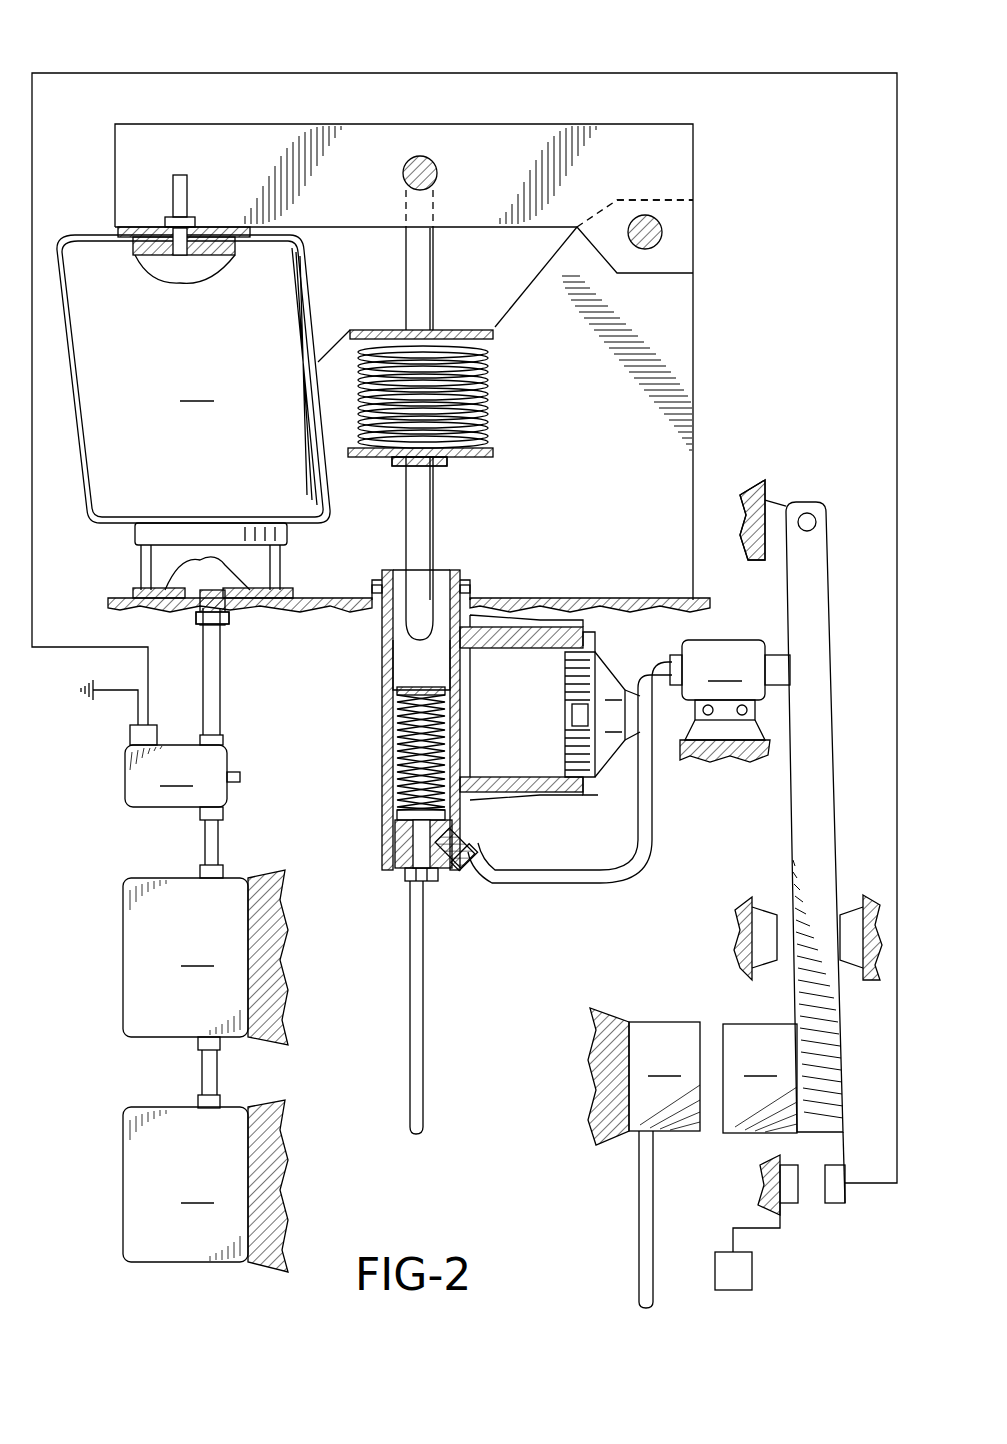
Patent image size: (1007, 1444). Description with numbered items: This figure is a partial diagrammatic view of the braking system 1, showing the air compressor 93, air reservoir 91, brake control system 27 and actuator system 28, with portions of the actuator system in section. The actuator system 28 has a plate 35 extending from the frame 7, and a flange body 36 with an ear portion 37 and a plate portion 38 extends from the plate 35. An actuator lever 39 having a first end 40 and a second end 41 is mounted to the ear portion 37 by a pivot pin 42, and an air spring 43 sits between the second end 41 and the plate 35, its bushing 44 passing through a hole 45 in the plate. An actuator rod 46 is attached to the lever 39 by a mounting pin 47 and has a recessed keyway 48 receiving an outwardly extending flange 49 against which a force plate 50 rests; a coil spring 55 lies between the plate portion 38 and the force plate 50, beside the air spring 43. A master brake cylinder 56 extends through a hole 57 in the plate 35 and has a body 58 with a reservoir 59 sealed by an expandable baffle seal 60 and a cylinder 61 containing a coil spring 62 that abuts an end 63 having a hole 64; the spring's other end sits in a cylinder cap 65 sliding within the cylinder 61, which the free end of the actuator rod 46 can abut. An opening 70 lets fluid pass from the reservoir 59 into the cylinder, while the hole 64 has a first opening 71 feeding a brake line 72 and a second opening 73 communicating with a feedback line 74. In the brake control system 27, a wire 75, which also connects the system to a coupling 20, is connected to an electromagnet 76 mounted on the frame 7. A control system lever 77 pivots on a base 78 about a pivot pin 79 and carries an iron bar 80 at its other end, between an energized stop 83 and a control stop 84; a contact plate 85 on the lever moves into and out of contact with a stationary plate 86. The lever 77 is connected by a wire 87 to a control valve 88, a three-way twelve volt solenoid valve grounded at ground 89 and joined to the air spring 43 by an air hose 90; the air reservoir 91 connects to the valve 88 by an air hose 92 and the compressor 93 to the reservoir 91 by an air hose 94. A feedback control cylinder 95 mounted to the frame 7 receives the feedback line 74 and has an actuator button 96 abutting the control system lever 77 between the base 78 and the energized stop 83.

The braking system 1 is at (618, 58).
The frame 7 is at (318, 608).
The coupling 20 is at (735, 1290).
The brake control system 27 is at (853, 1136).
The actuator system 28 is at (693, 372).
The plate 35 is at (592, 598).
The flange body 36 is at (675, 315).
The ear portion 37 is at (693, 200).
The plate portion 38 is at (494, 336).
The actuator lever 39 is at (693, 148).
The first end 40 is at (655, 130).
The second end 41 is at (118, 165).
The pivot pin 42 is at (650, 240).
The air spring 43 is at (193, 382).
The bushing 44 is at (230, 615).
The hole 45 is at (203, 598).
The actuator rod 46 is at (436, 522).
The mounting pin 47 is at (415, 173).
The recessed keyway 48 is at (413, 466).
The outwardly extending flange 49 is at (440, 466).
The force plate 50 is at (494, 453).
The coil spring 55 is at (490, 388).
The master brake cylinder 56 is at (588, 810).
The hole 57 is at (458, 582).
The body 58 is at (547, 793).
The reservoir 59 is at (562, 795).
The expandable baffle seal 60 is at (590, 740).
The cylinder 61 is at (398, 748).
The coil spring 62 is at (398, 782).
The end 63 is at (393, 820).
The hole 64 is at (420, 835).
The cylinder cap 65 is at (410, 660).
The opening 70 is at (462, 722).
The first opening 71 is at (418, 882).
The brake line 72 is at (425, 1040).
The second opening 73 is at (465, 862).
The feedback line 74 is at (545, 884).
The wire 75 is at (639, 1217).
The electromagnet 76 is at (664, 1076).
The control system lever 77 is at (832, 620).
The base 78 is at (772, 540).
The pivot pin 79 is at (806, 514).
The iron bar 80 is at (760, 1078).
The energized stop 83 is at (765, 918).
The control stop 84 is at (852, 920).
The contact plate 85 is at (838, 1200).
The stationary plate 86 is at (790, 1200).
The wire 87 is at (316, 73).
The control valve 88 is at (182, 766).
The ground 89 is at (95, 700).
The air hose 90 is at (222, 688).
The air reservoir 91 is at (185, 957).
The air hose 92 is at (220, 840).
The air compressor 93 is at (185, 1184).
The air hose 94 is at (220, 1083).
The feedback control cylinder 95 is at (717, 690).
The actuator button 96 is at (780, 670).